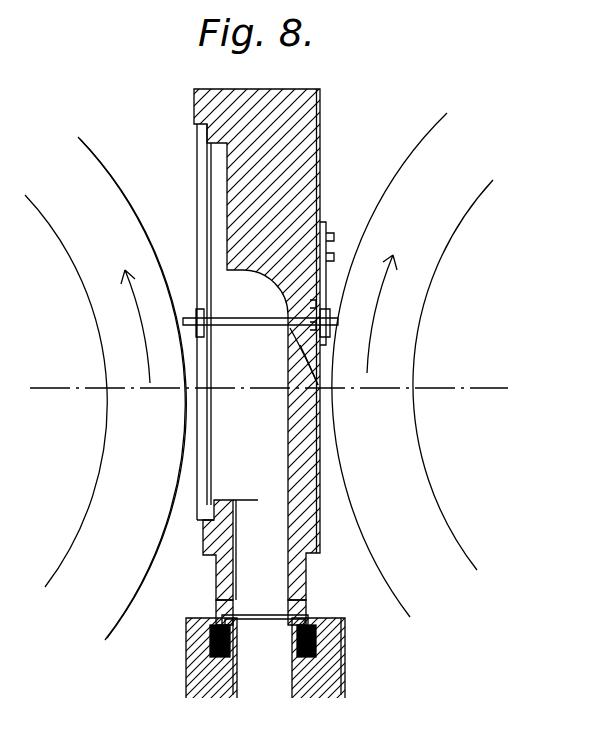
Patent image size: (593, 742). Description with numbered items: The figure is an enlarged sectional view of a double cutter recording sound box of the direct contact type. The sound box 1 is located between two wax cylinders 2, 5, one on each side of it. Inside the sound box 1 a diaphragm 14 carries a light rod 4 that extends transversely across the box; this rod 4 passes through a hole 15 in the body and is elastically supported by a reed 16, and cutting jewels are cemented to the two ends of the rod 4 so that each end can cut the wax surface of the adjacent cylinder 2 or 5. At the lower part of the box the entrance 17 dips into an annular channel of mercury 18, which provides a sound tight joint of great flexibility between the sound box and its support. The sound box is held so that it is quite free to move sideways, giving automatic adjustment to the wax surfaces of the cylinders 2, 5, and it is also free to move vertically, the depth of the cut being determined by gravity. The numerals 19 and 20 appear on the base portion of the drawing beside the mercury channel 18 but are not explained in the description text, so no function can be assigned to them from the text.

The sound box 1 is at (268, 89).
The cylinder 2 is at (127, 192).
The light rod 4 is at (256, 327).
The cylinder 5 is at (401, 172).
The diaphragm 14 is at (206, 212).
The hole 15 is at (318, 386).
The reed 16 is at (330, 280).
The entrance 17 is at (216, 588).
The annular channel of mercury 18 is at (215, 657).
The base block 19 is at (345, 633).
The connector 20 is at (268, 678).